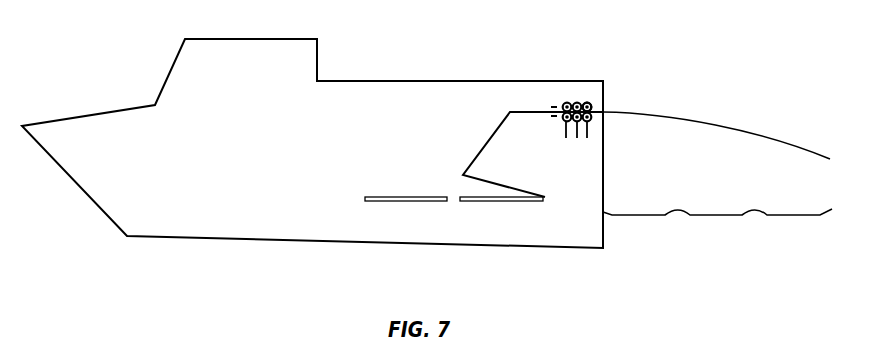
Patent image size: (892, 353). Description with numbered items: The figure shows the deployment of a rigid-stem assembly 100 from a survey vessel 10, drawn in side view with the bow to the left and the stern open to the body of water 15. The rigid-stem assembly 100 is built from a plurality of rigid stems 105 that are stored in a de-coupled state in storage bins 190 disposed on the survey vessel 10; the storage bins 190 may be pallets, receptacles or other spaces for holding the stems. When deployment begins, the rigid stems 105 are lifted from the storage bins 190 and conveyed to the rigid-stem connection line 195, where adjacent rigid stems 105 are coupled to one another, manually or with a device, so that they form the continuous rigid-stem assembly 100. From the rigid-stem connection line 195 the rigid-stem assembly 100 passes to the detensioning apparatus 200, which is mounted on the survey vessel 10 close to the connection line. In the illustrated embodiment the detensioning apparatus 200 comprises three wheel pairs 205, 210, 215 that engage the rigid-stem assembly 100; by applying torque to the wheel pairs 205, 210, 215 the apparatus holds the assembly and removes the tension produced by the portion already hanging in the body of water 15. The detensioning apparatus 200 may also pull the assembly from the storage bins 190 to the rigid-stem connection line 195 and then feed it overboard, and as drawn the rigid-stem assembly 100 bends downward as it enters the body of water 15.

The survey vessel 10 is at (373, 81).
The rigid stem 105 is at (518, 112).
The storage bin 190 is at (408, 202).
The rigid-stem connection line 195 is at (555, 100).
The detensioning apparatus 200 is at (579, 100).
The wheel pair 205 is at (562, 120).
The wheel pair 210 is at (578, 137).
The wheel pair 215 is at (589, 104).
The rigid-stem assembly 100 is at (728, 120).
The body of water 15 is at (725, 247).